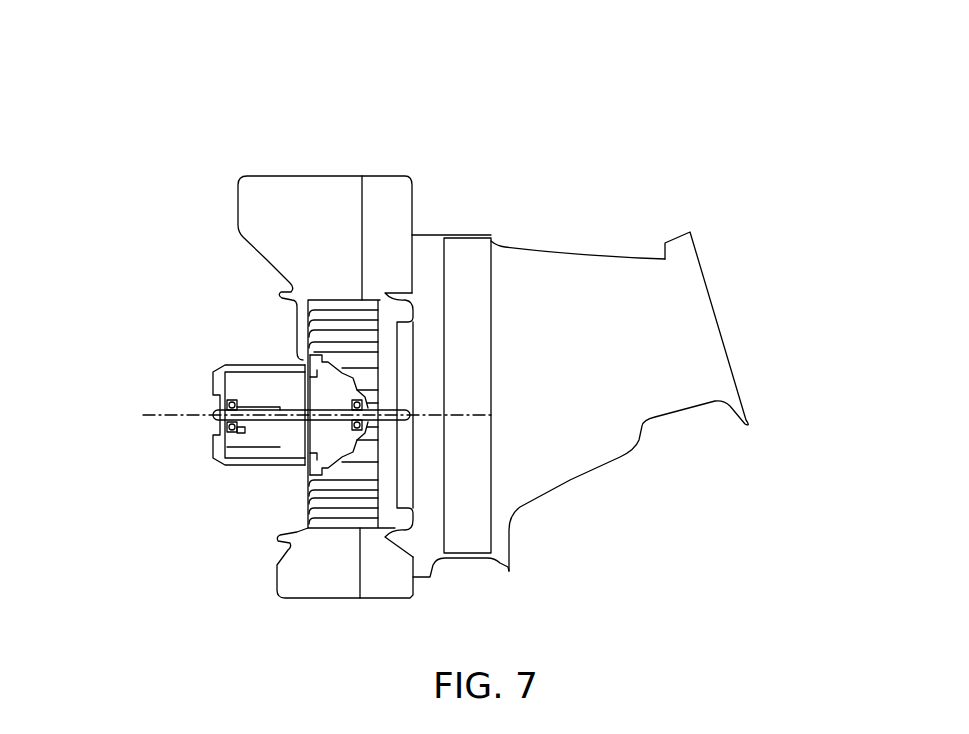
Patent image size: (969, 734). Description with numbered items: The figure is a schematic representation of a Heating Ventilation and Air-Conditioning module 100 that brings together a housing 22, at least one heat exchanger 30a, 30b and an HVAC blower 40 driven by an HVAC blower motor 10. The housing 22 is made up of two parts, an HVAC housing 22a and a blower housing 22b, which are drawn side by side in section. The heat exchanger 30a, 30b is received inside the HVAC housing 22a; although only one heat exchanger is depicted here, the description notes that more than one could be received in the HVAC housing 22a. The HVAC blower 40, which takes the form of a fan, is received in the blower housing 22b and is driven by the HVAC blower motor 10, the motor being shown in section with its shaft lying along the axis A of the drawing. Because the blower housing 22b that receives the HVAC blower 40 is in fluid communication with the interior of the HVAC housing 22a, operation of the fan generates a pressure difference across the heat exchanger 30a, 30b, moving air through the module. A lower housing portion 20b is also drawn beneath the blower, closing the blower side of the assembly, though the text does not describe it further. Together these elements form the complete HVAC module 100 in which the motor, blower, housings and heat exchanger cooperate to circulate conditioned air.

The HVAC module 100 is at (716, 160).
The HVAC blower motor 10 is at (258, 447).
The HVAC blower 40 is at (342, 307).
The housing 22 is at (500, 247).
The HVAC housing 22a is at (553, 263).
The blower housing 22b is at (419, 192).
The lower housing 20b is at (312, 592).
The heat exchanger 30a is at (483, 540).
The heat exchanger 30b is at (467, 395).
The rotation axis A is at (163, 412).